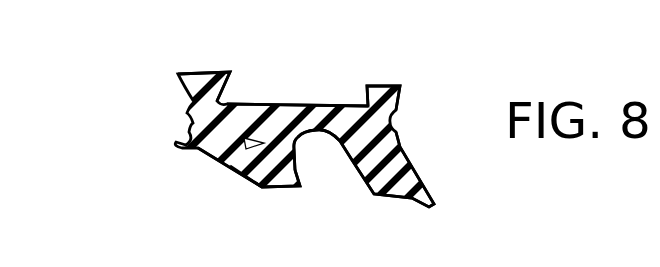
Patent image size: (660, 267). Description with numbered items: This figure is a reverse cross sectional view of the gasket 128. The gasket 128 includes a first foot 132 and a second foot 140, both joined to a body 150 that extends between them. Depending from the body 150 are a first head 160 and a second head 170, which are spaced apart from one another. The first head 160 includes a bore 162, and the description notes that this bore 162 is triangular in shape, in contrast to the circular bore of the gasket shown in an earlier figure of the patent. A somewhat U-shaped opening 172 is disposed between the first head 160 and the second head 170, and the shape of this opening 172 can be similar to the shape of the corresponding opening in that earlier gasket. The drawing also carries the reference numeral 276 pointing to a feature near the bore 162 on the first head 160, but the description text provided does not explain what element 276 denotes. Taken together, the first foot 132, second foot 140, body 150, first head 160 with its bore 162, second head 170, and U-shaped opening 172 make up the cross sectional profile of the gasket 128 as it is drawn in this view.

The gasket 128 is at (178, 111).
The first foot 132 is at (202, 77).
The body 150 is at (297, 106).
The second foot 140 is at (382, 90).
The second head 170 is at (398, 176).
The U-shaped opening 172 is at (328, 157).
The first head 160 is at (283, 189).
The barb 276 is at (237, 168).
The bore 162 is at (257, 143).